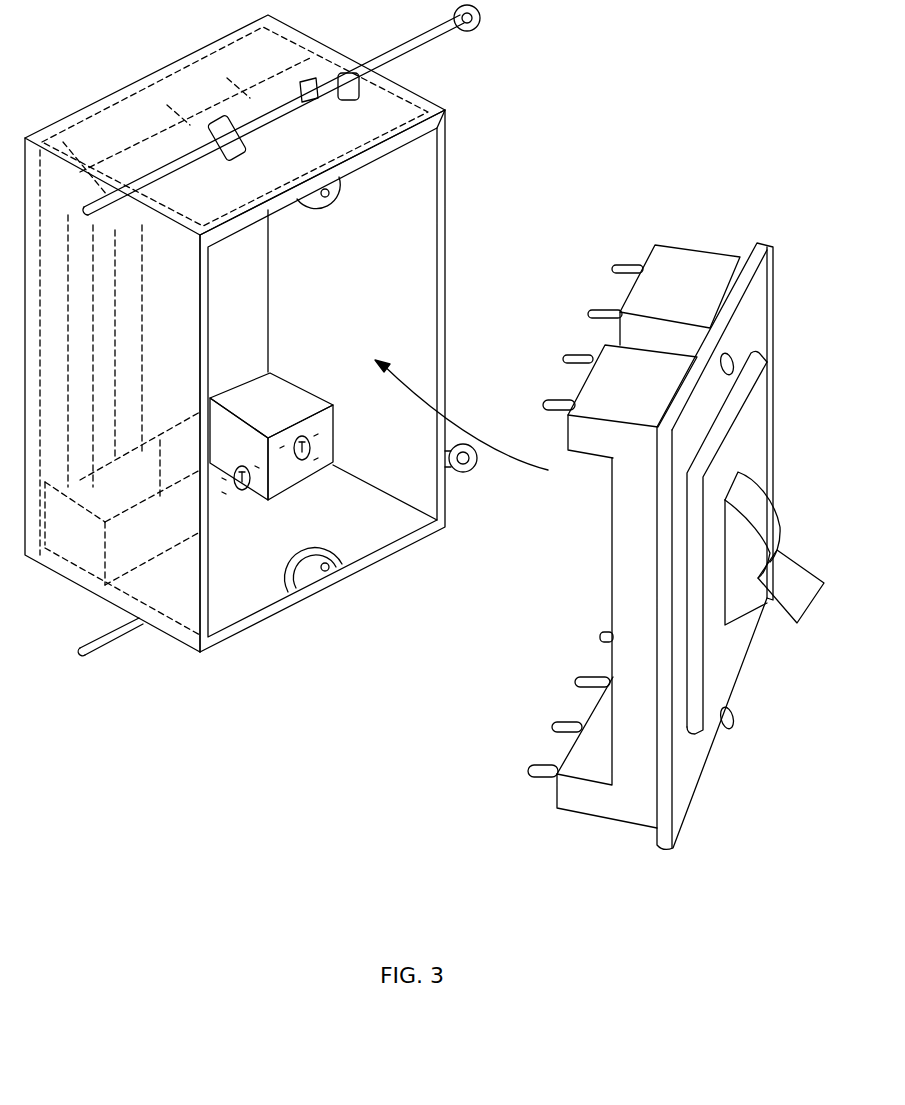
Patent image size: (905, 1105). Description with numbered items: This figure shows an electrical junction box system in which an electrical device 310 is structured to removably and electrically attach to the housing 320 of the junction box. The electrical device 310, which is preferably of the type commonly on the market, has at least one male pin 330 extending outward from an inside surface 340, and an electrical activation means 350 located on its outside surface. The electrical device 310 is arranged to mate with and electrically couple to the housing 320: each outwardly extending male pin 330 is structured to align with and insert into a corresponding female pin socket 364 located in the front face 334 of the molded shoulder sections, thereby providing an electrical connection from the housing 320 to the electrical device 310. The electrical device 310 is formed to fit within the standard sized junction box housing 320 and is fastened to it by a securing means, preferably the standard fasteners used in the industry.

The electrical device 310 is at (705, 262).
The housing 320 is at (387, 245).
The male pin 330 is at (563, 718).
The front face 334 is at (323, 427).
The inside surface 340 is at (622, 305).
The electrical activation means 350 is at (757, 413).
The female pin sockets 364 is at (242, 500).